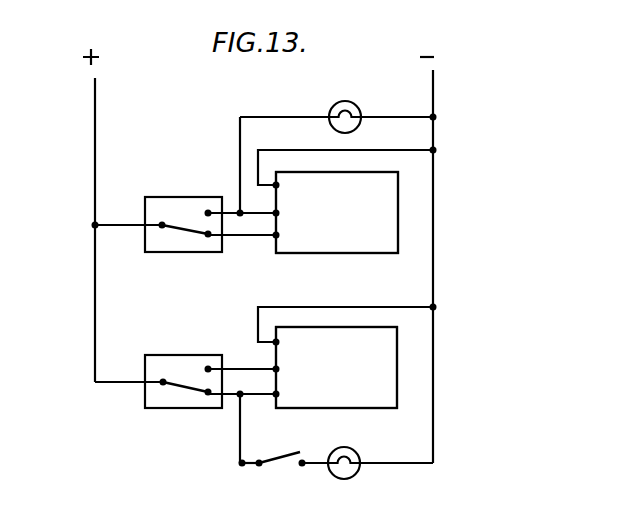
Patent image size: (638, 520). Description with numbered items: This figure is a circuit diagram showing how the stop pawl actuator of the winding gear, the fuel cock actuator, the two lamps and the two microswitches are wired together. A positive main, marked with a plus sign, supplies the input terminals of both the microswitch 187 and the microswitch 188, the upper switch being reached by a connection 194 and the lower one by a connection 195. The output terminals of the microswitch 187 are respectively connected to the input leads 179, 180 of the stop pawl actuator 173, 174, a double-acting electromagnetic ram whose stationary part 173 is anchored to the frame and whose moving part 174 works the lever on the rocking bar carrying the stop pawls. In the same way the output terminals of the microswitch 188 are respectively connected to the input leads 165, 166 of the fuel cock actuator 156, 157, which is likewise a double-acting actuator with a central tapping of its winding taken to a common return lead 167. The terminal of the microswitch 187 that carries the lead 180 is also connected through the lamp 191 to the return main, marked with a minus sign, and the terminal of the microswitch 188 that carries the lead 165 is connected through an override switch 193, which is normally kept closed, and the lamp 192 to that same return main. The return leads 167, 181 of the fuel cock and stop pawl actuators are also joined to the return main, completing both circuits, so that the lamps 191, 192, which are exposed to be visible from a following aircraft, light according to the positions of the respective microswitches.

The lamp 191 is at (340, 101).
The return lead 181 is at (380, 150).
The conductor 194 is at (110, 223).
The microswitch 187 is at (173, 210).
The input lead 180 is at (231, 212).
The input lead 179 is at (248, 237).
The stationary part of electromagnetic ram 173 is at (373, 208).
The moving part of electromagnetic ram 174 is at (393, 206).
The common return lead 167 is at (306, 307).
The input lead 166 is at (235, 369).
The input lead 165 is at (232, 397).
The fuel cock actuator 156 is at (372, 385).
The fuel cock actuator 157 is at (392, 367).
The conductor 195 is at (120, 383).
The microswitch 188 is at (175, 396).
The override switch 193 is at (282, 466).
The lamp 192 is at (360, 474).